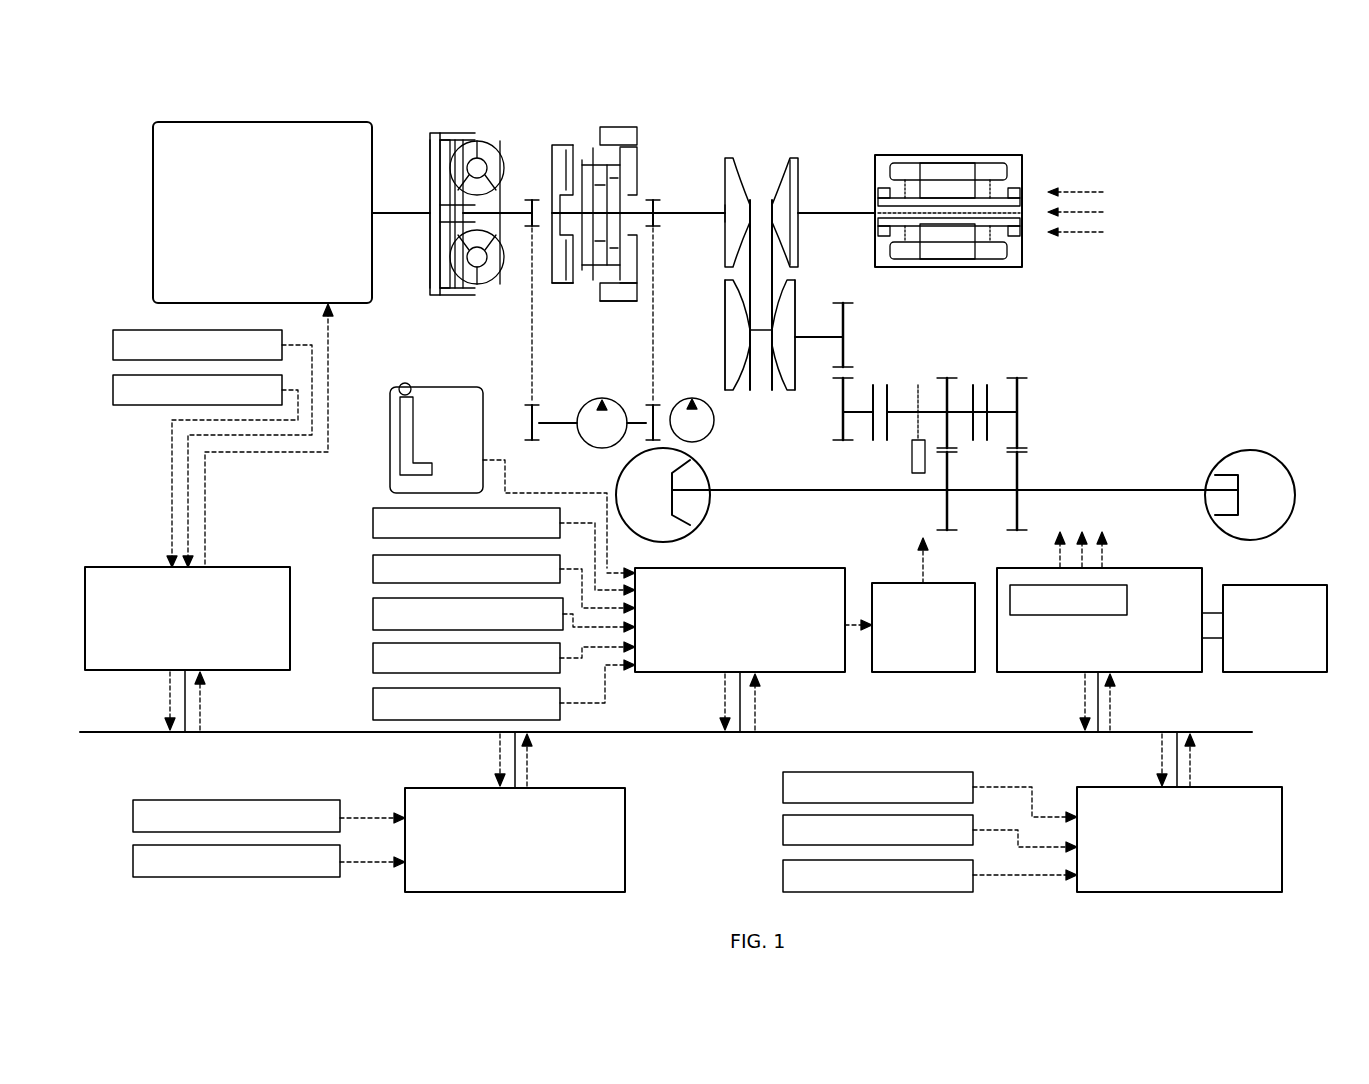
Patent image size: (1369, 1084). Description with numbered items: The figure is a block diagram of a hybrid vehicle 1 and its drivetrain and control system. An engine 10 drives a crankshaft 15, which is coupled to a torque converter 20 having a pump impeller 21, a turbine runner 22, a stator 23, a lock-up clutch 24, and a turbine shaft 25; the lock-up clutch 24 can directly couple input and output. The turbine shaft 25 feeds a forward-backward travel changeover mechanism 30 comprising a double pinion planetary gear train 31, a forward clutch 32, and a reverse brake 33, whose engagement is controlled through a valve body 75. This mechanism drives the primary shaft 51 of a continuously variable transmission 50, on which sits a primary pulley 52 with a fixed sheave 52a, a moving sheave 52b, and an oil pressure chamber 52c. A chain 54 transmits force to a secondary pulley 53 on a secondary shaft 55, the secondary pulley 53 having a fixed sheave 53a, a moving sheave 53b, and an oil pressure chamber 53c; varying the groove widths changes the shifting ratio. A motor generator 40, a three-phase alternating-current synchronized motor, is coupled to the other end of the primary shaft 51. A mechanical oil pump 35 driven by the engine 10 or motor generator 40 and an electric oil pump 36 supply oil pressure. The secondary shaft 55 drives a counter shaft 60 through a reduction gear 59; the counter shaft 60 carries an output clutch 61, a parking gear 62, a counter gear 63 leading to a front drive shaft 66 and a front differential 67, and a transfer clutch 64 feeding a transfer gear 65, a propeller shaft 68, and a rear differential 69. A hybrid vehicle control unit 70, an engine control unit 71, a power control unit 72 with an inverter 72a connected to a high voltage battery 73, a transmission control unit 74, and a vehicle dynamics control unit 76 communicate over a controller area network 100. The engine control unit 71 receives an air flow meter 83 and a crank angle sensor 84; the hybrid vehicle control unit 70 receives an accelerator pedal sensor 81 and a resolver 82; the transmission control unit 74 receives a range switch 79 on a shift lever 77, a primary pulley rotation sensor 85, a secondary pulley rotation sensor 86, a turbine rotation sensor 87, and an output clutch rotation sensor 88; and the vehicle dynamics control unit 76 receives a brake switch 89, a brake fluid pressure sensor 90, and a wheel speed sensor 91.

The hybrid vehicle 1 is at (1162, 162).
The engine 10 is at (153, 210).
The crankshaft 15 is at (400, 212).
The torque converter 20 is at (513, 92).
The pump impeller 21 is at (496, 142).
The turbine runner 22 is at (442, 140).
The stator 23 is at (472, 141).
The lock-up clutch 24 is at (432, 290).
The turbine shaft 25 is at (512, 205).
The forward-backward travel changeover mechanism 30 is at (612, 127).
The planetary gear train 31 is at (592, 320).
The forward clutch 32 is at (568, 300).
The reverse brake 33 is at (628, 305).
The mechanical oil pump 35 is at (580, 440).
The electric oil pump 36 is at (705, 442).
The motor generator 40 is at (960, 155).
The continuously variable transmission 50 is at (822, 150).
The primary shaft 51 is at (680, 212).
The primary pulley 52 is at (792, 97).
The fixed sheave 52a is at (728, 157).
The moving sheave 52b is at (788, 157).
The oil pressure chamber 52c is at (795, 185).
The secondary pulley 53 is at (786, 458).
The fixed sheave 53a is at (788, 392).
The moving sheave 53b is at (733, 392).
The oil pressure chamber 53c is at (724, 348).
The chain 54 is at (724, 272).
The secondary shaft 55 is at (818, 336).
The reduction gear 59 is at (846, 302).
The counter shaft 60 is at (852, 400).
The output clutch 61 is at (882, 384).
The parking gear 62 is at (915, 384).
The counter gear 63 is at (952, 376).
The transfer clutch 64 is at (984, 384).
The transfer gear 65 is at (1022, 376).
The front drive shaft 66 is at (785, 492).
The front differential 67 is at (618, 483).
The propeller shaft 68 is at (1172, 489).
The rear differential 69 is at (1262, 452).
The hybrid vehicle control unit 70 is at (625, 840).
The engine control unit 71 is at (282, 672).
The power control unit 72 is at (1039, 674).
The inverter 72a is at (1128, 600).
The high voltage battery 73 is at (1290, 674).
The transmission control unit 74 is at (692, 674).
The valve body 75 is at (934, 674).
The vehicle dynamics control unit 76 is at (1282, 840).
The shift lever 77 is at (398, 395).
The range switch 79 is at (372, 524).
The accelerator pedal sensor 81 is at (130, 820).
The resolver 82 is at (130, 862).
The air flow meter 83 is at (112, 346).
The crank angle sensor 84 is at (112, 390).
The primary pulley rotation sensor 85 is at (372, 571).
The secondary pulley rotation sensor 86 is at (372, 615).
The turbine rotation sensor 87 is at (372, 659).
The output clutch rotation sensor 88 is at (372, 704).
The brake switch 89 is at (782, 792).
The brake fluid pressure sensor 90 is at (782, 835).
The wheel speed sensor 91 is at (782, 880).
The controller area network 100 is at (645, 734).